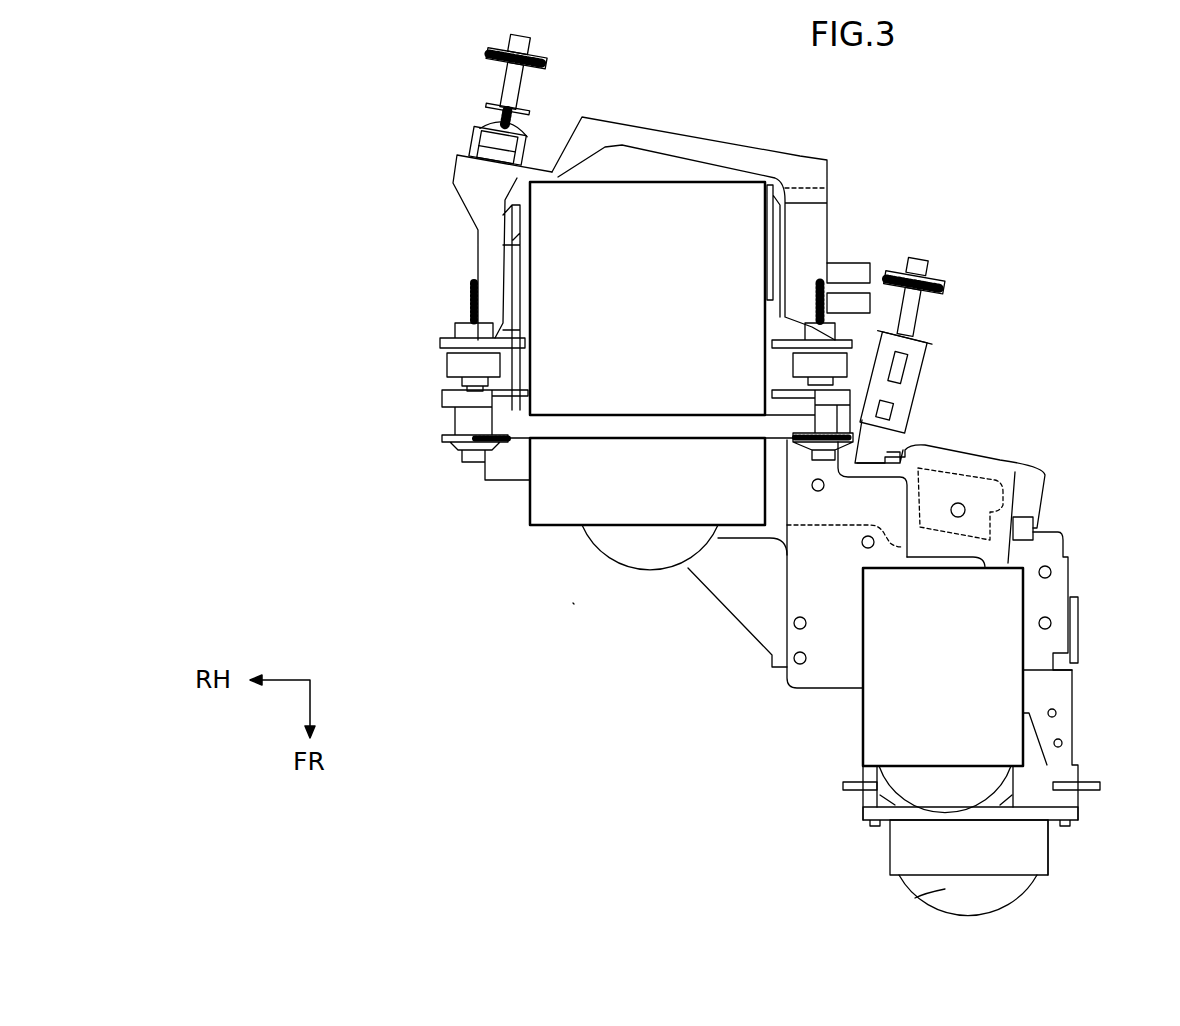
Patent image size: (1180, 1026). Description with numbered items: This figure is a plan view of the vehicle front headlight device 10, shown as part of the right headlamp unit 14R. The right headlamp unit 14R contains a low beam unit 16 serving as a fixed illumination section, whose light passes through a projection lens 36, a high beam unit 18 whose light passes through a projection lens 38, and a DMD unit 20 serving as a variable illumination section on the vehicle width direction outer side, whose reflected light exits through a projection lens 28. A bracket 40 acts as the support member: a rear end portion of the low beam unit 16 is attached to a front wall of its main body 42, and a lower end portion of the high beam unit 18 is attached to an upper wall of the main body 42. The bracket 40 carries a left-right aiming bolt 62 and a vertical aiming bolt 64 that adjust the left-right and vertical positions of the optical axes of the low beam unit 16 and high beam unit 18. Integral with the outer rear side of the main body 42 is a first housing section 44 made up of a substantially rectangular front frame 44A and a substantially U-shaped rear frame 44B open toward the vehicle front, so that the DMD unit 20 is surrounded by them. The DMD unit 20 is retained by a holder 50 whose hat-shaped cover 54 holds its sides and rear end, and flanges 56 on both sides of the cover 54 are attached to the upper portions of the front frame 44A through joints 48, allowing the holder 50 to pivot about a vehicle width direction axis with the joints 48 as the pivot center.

The vehicle front headlight device 10 is at (571, 606).
The right headlamp unit 14R is at (908, 222).
The low beam unit 16 is at (1056, 840).
The high beam unit 18 is at (1031, 704).
The DMD unit 20 is at (533, 530).
The projection lens 28 is at (644, 571).
The projection lens 36 is at (947, 888).
The projection lens 38 is at (1010, 790).
The bracket 40 is at (789, 692).
The main body 42 is at (830, 690).
The first housing section 44 is at (571, 441).
The front frame 44A is at (641, 426).
The rear frame 44B is at (641, 123).
The joint 48 is at (470, 363).
The holder 50 is at (514, 237).
The cover 54 is at (772, 208).
The flange 56 is at (440, 335).
The left-right aiming bolt 62 is at (484, 58).
The vertical aiming bolt 64 is at (945, 287).